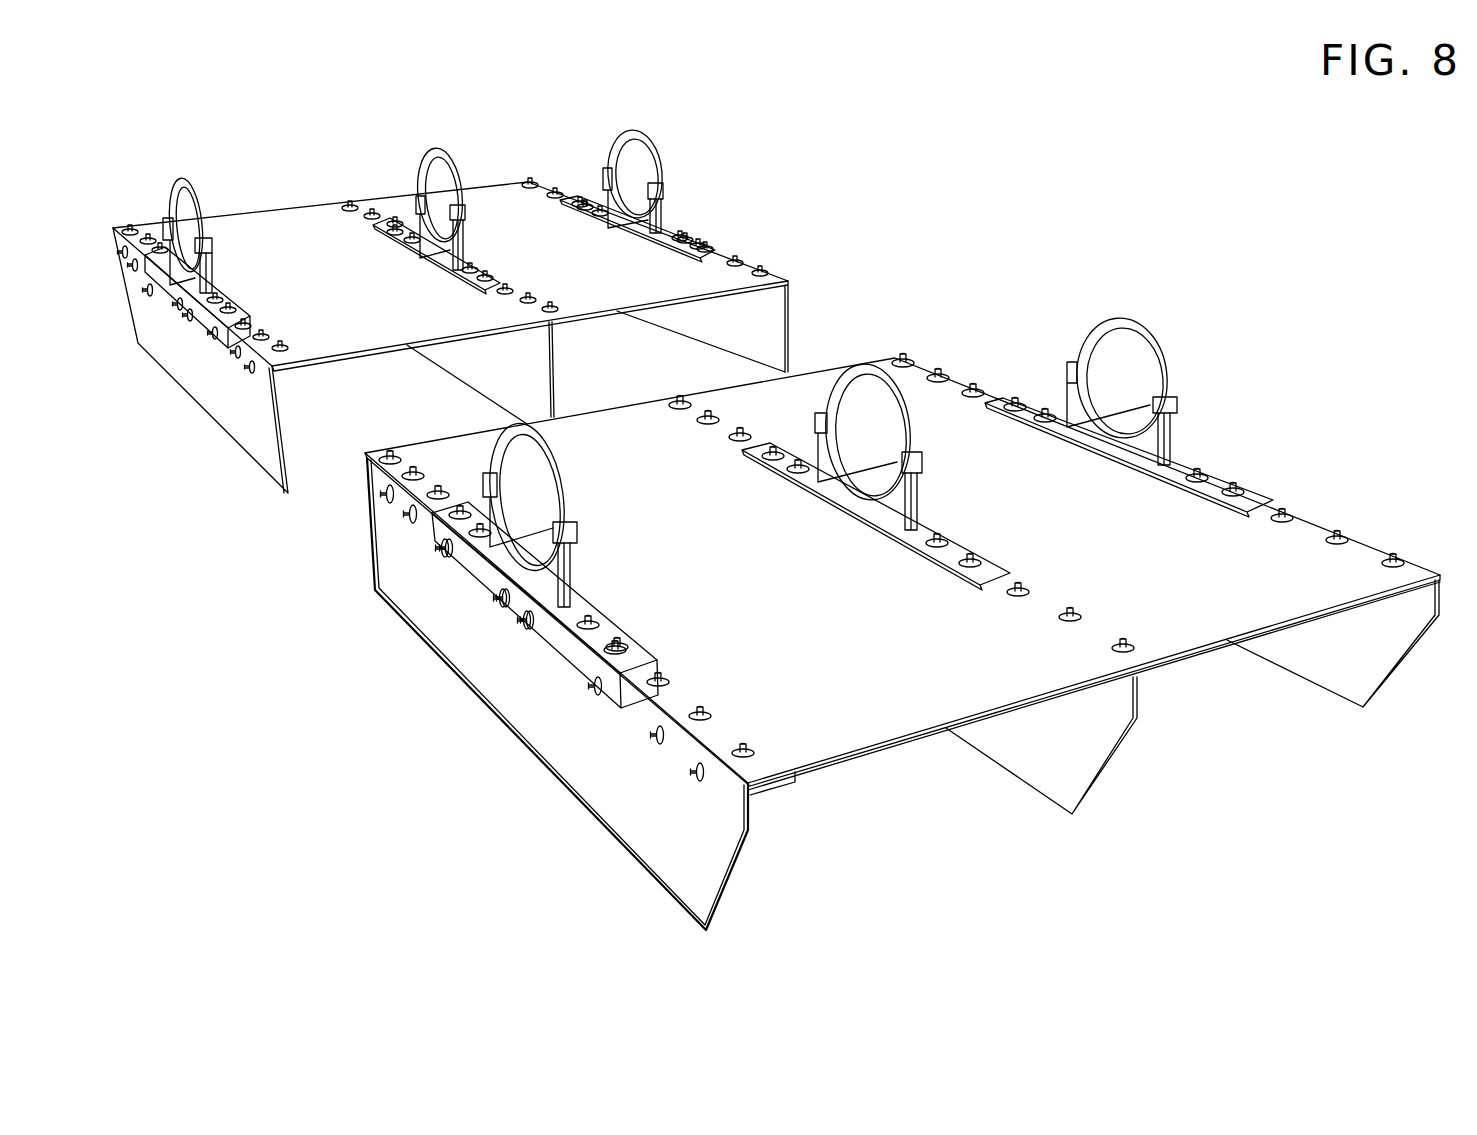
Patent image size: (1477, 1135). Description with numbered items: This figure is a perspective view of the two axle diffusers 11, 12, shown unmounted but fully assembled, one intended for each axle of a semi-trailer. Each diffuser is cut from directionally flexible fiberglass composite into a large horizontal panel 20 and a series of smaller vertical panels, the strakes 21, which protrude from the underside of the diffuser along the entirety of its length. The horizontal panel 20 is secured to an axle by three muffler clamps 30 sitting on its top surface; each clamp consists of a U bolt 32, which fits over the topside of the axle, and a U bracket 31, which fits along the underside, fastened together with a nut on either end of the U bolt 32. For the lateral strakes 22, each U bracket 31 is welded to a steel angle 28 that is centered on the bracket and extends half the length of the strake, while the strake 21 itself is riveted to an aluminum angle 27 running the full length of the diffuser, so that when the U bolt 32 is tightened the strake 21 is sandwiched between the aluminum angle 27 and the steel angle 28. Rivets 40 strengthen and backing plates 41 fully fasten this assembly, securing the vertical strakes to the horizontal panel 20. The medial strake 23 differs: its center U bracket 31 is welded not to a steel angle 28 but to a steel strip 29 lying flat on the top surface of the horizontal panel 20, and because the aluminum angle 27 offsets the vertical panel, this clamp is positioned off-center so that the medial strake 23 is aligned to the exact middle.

The diffuser 11 is at (902, 642).
The diffuser 12 is at (450, 319).
The horizontal panel 20 is at (828, 770).
The strake 21 is at (1115, 750).
The lateral strake 22 is at (545, 563).
The medial strake 23 is at (895, 445).
The aluminum angle 27 is at (1413, 628).
The steel angle 28 is at (1214, 490).
The steel strip 29 is at (786, 462).
The muffler clamp 30 is at (637, 178).
The U bracket 31 is at (1065, 388).
The U bolt 32 is at (1155, 342).
The rivet 40 is at (690, 777).
The backing plate 41 is at (714, 705).